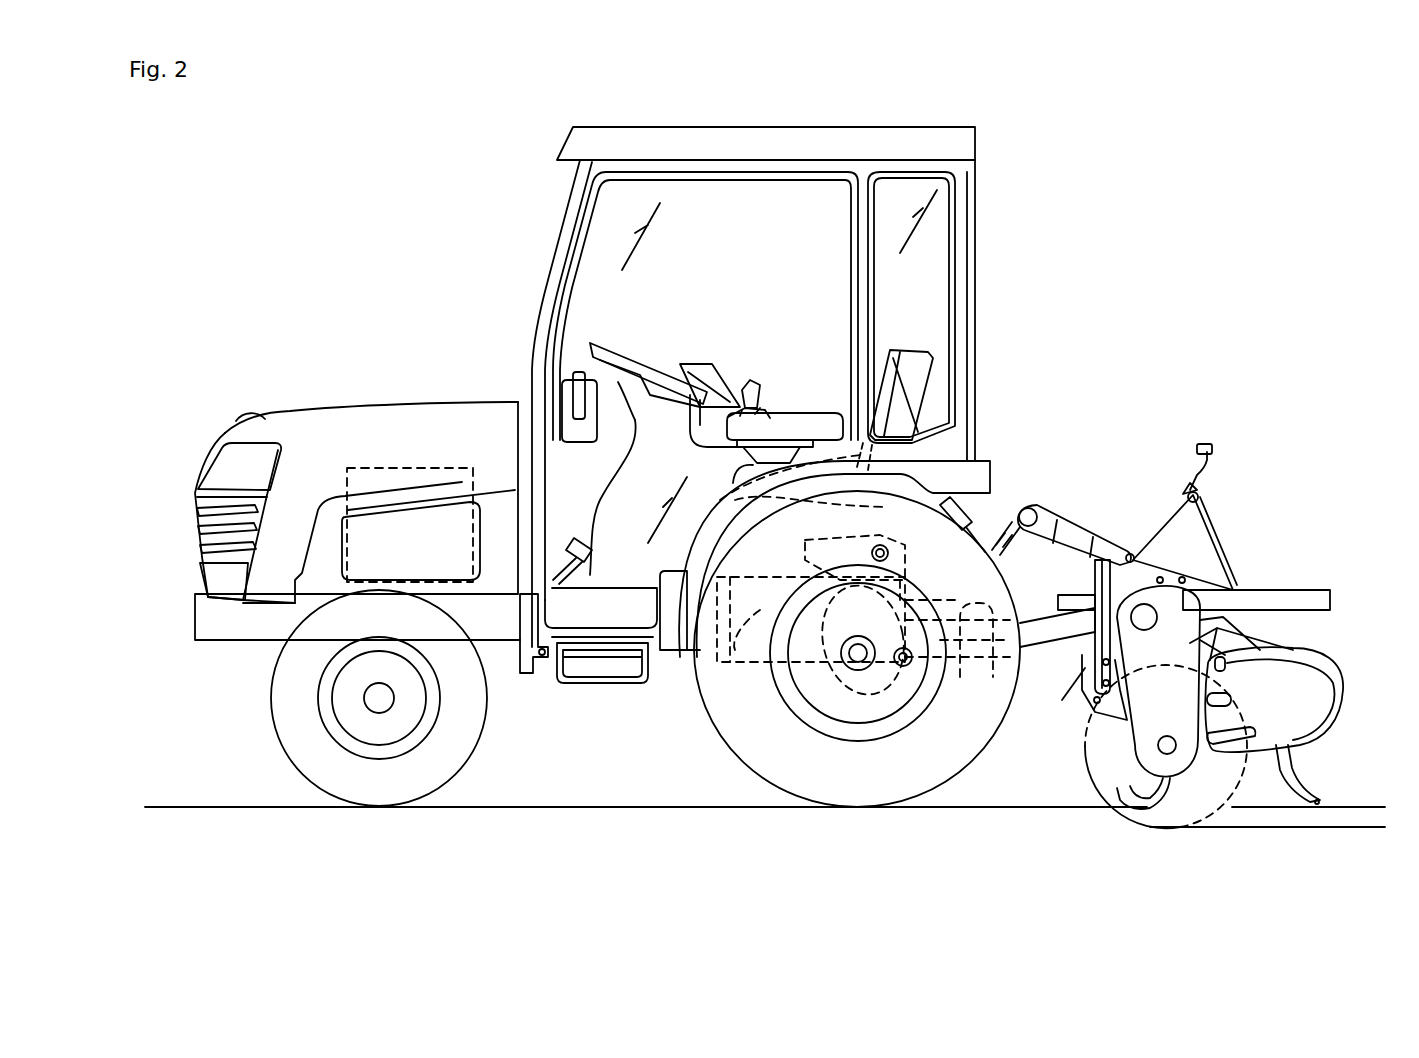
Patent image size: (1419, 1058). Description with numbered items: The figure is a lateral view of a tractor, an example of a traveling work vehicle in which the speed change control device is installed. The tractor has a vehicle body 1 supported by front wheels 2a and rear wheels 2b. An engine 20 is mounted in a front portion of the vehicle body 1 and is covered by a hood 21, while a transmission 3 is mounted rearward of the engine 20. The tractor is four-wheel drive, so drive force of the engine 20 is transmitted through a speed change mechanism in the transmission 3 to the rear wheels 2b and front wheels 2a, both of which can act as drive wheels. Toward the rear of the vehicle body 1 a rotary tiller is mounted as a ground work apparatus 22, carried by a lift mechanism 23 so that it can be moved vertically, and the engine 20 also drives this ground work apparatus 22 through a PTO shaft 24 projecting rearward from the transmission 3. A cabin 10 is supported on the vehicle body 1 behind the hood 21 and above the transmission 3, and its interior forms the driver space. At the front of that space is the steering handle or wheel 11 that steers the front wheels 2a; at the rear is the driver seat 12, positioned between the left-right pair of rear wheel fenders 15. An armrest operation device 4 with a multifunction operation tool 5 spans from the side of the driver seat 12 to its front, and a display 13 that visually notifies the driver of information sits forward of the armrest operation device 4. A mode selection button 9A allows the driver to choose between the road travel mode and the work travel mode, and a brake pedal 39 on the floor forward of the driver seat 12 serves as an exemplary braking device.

The vehicle body 1 is at (214, 650).
The front wheels 2a is at (308, 768).
The rear wheels 2b is at (748, 763).
The transmission 3 is at (735, 650).
The armrest operation device 4 is at (812, 410).
The multifunction operation tool 5 is at (735, 410).
The mode selection button 9A is at (740, 417).
The cabin 10 is at (568, 212).
The steering handle or wheel 11 is at (643, 363).
The driver seat 12 is at (918, 343).
The display 13 is at (708, 378).
The rear wheel fenders 15 is at (980, 462).
The engine 20 is at (410, 466).
The hood 21 is at (315, 407).
The ground work apparatus 22 is at (1277, 497).
The lift mechanism 23 is at (1058, 500).
The PTO shaft 24 is at (992, 663).
The brake pedal 39 is at (592, 542).